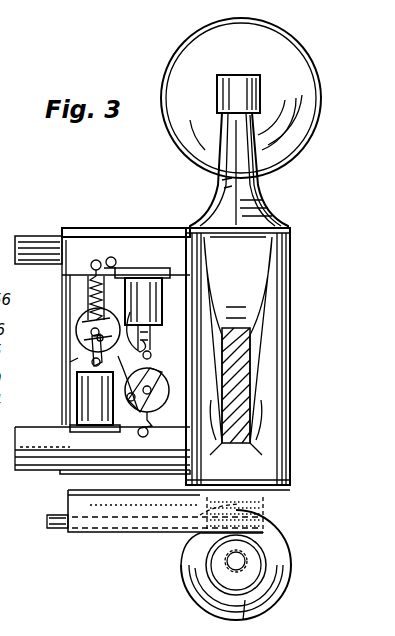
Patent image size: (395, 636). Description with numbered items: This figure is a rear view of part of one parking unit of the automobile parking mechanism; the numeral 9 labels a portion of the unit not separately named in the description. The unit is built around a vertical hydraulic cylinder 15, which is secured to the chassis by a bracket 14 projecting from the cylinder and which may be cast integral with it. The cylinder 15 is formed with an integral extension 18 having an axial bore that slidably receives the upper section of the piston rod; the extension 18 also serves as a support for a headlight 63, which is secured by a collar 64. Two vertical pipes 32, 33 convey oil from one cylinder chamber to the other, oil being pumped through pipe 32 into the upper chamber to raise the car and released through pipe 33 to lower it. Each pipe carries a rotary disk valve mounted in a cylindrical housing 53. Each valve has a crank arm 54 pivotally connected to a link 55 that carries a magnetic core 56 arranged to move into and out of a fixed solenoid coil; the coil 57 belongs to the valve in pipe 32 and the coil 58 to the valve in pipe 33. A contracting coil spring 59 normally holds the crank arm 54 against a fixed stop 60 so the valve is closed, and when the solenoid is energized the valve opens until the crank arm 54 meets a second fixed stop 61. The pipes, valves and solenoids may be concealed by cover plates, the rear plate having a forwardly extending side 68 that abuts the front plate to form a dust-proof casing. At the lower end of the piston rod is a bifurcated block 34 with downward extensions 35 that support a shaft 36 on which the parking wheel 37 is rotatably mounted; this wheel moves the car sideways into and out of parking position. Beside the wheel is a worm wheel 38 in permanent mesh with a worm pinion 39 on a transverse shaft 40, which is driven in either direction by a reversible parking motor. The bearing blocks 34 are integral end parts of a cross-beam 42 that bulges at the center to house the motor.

The headlight 63 is at (284, 72).
The collar 64 is at (217, 96).
The cylinder extension 18 is at (264, 200).
The hydraulic cylinder 15 is at (276, 433).
The bracket 14 is at (240, 345).
The vertical pipe 33 is at (188, 343).
The vertical pipe 32 is at (76, 275).
The solenoid coil 58 is at (142, 272).
The fixed stop 60 is at (110, 278).
The contracting coil spring 59 is at (88, 292).
The cylindrical valve housing 53 is at (78, 322).
The crank arm 54 is at (92, 338).
The link 55 is at (140, 350).
The magnetic core 56 is at (186, 343).
The second fixed stop 61 is at (130, 372).
The forwardly extending side 68 is at (66, 362).
The solenoid coil 57 is at (80, 384).
The base 9 is at (18, 446).
The transverse shaft 40 is at (62, 512).
The cross-beam 42 is at (80, 508).
The bifurcated block 34 is at (264, 502).
The worm pinion 39 is at (255, 517).
The parking wheel 37 is at (200, 592).
The downward extension 35 is at (240, 552).
The shaft 36 is at (240, 566).
The worm wheel 38 is at (246, 605).